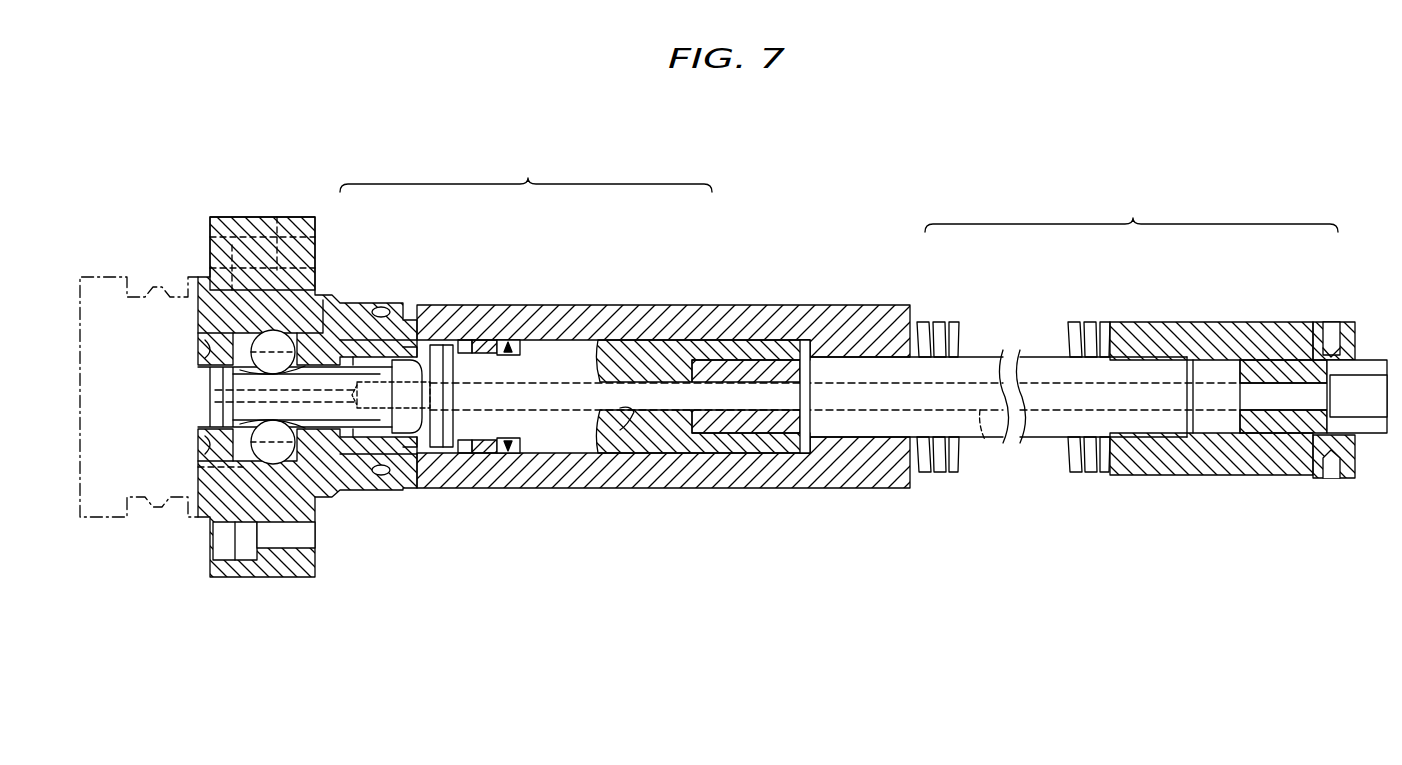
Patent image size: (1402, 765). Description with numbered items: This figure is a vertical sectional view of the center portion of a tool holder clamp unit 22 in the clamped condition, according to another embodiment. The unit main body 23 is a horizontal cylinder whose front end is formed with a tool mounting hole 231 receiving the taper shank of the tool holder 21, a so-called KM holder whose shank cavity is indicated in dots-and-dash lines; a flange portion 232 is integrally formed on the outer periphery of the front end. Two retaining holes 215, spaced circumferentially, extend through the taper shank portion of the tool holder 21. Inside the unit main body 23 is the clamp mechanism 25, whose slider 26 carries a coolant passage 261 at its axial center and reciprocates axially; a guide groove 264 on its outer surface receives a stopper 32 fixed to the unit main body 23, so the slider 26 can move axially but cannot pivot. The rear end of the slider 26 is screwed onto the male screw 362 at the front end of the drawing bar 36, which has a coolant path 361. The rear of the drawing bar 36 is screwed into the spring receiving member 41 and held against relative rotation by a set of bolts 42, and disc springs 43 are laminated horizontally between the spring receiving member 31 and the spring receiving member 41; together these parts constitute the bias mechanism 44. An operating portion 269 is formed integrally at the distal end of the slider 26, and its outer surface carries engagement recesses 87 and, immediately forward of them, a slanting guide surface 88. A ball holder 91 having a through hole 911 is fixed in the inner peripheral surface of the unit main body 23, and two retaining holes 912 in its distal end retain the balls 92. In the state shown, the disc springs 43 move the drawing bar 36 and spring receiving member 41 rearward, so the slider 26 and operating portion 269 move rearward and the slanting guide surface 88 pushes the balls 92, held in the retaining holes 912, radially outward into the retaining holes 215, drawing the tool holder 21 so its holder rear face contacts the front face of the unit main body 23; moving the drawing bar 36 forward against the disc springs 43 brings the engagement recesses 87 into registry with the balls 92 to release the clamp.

The tool holder 21 is at (100, 277).
The tool holder clamp unit 22 is at (772, 191).
The unit main body 23 is at (355, 303).
The clamp mechanism 25 is at (526, 169).
The slider 26 is at (660, 348).
The spring receiving member 31 is at (852, 312).
The stopper 32 is at (483, 340).
The drawing bar 36 is at (968, 362).
The spring receiving member 41 is at (1238, 330).
The bolts 42 is at (1325, 322).
The disc springs 43 is at (1085, 325).
The bias mechanism 44 is at (1131, 209).
The engagement recesses 87 is at (452, 372).
The slanting guide surface 88 is at (232, 378).
The ball holder 91 is at (396, 340).
The balls 92 is at (262, 352).
The retaining holes 215 is at (232, 244).
The tool mounting hole 231 is at (215, 335).
The flange portion 232 is at (282, 232).
The coolant passage 261 is at (630, 440).
The guide groove 264 is at (514, 338).
The operating portion 269 is at (400, 470).
The coolant path 361 is at (985, 442).
The male screw 362 is at (762, 455).
The through hole 911 is at (380, 455).
The retaining holes 912 is at (318, 300).